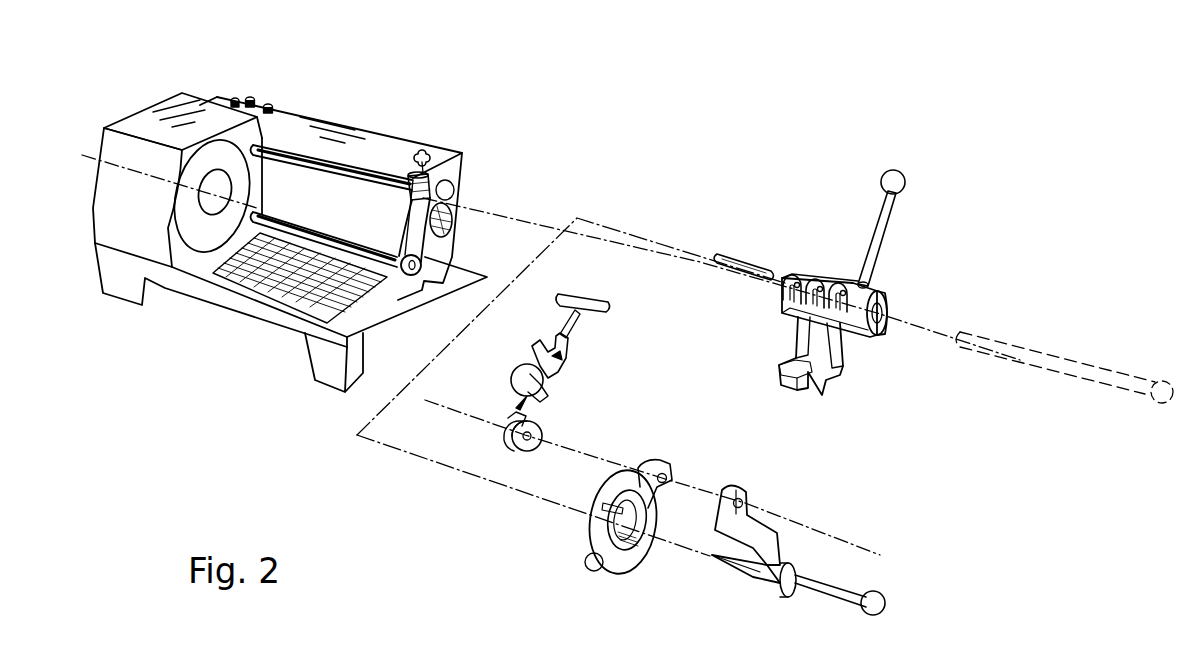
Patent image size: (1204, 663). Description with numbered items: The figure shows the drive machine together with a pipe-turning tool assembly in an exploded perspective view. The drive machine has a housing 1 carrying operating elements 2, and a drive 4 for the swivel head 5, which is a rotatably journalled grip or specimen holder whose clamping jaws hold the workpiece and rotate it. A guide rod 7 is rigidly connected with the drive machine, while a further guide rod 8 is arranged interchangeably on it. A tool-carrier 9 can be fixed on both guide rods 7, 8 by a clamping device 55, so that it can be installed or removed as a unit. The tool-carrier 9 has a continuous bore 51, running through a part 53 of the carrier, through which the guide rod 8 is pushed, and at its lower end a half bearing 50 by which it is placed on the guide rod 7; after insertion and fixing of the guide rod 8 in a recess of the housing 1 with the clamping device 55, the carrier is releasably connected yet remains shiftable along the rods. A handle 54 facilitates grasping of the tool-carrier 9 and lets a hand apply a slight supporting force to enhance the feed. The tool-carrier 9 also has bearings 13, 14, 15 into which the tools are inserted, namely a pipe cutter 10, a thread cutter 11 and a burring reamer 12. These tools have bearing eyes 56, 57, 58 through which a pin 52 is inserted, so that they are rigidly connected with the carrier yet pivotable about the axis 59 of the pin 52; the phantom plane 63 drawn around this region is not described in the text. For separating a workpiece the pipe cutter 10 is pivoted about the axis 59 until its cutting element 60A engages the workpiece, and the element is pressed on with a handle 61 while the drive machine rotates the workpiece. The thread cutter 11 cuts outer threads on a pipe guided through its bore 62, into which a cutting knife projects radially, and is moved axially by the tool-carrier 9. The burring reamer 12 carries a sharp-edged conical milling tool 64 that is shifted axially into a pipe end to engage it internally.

The housing 1 is at (316, 128).
The operating elements 2 is at (267, 104).
The drive 4 is at (145, 90).
The swivel head 5 is at (205, 243).
The guide rod 7 is at (373, 253).
The further guide rod 8 is at (366, 170).
The tool-carrier 9 is at (886, 283).
The pipe cutter 10 is at (565, 368).
The thread cutter 11 is at (648, 462).
The burring reamer 12 is at (762, 527).
The bearing 13 is at (795, 268).
The bearing 14 is at (815, 272).
The bearing 15 is at (840, 276).
The half bearing 50 is at (817, 390).
The bore 51 is at (882, 313).
The pin 52 is at (736, 254).
The part of the tool-carrier 53 is at (786, 304).
The handle 54 is at (906, 180).
The clamping device 55 is at (428, 153).
The bearing eye 56 is at (546, 434).
The bearing eye 57 is at (674, 478).
The bearing eye 58 is at (750, 500).
The axis 59 is at (626, 234).
The cutting element 60A is at (562, 390).
The handle 61 is at (612, 303).
The bore 62 is at (605, 536).
The phantom plane edge 63 is at (363, 441).
The conical milling tool 64 is at (742, 570).